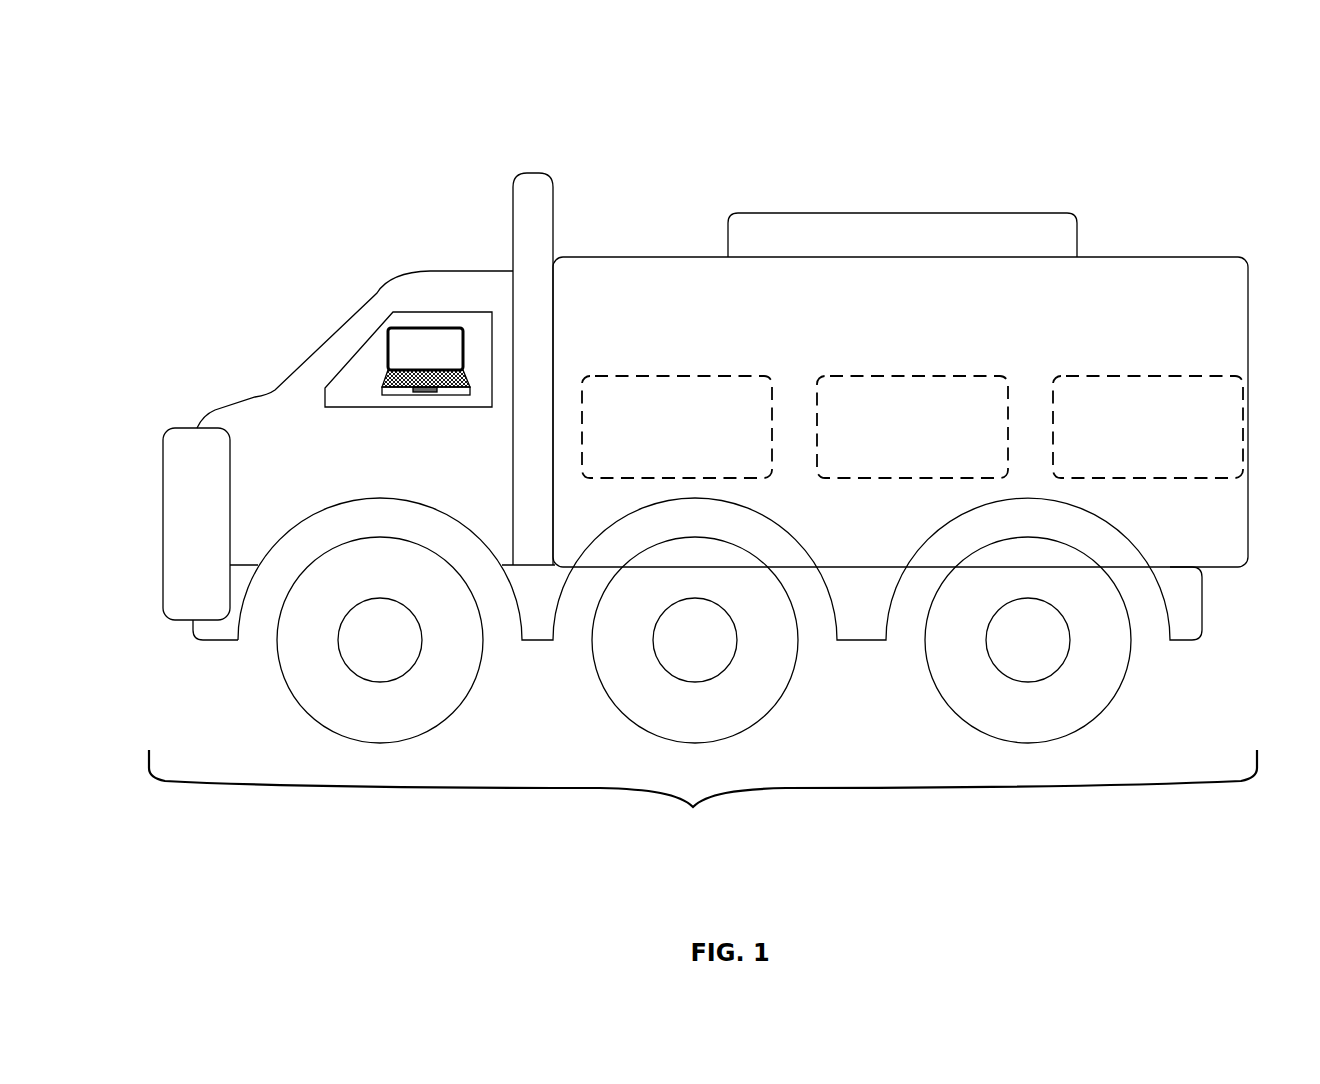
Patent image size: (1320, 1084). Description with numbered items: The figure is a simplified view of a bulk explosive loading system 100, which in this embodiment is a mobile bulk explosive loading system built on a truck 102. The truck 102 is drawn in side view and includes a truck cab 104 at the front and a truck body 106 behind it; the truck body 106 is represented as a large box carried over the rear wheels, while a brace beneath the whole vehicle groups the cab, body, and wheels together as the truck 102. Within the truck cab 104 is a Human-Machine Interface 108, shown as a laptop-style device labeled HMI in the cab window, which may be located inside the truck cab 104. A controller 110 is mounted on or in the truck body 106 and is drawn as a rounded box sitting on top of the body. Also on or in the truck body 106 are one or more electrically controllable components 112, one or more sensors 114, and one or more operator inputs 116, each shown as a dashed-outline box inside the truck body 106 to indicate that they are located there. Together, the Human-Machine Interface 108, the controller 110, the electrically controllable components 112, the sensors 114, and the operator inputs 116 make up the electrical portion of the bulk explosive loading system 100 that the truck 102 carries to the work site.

The bulk explosive loading system 100 is at (1052, 108).
The truck 102 is at (695, 805).
The truck cab 104 is at (288, 381).
The truck body 106 is at (665, 257).
The Human-Machine Interface 108 is at (408, 327).
The controller 110 is at (880, 213).
The electrically controllable components 112 is at (679, 376).
The sensors 114 is at (917, 376).
The operator inputs 116 is at (1157, 376).